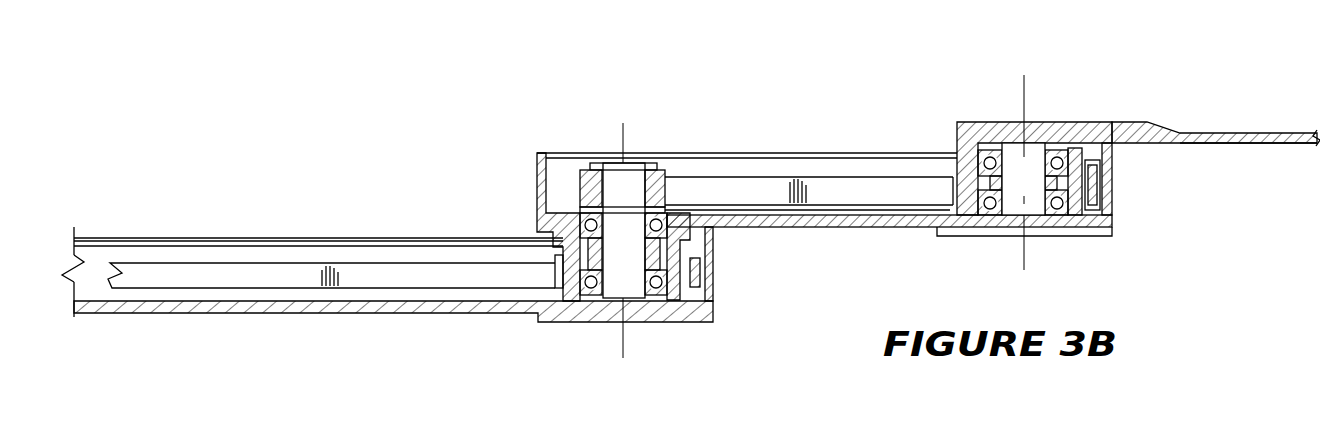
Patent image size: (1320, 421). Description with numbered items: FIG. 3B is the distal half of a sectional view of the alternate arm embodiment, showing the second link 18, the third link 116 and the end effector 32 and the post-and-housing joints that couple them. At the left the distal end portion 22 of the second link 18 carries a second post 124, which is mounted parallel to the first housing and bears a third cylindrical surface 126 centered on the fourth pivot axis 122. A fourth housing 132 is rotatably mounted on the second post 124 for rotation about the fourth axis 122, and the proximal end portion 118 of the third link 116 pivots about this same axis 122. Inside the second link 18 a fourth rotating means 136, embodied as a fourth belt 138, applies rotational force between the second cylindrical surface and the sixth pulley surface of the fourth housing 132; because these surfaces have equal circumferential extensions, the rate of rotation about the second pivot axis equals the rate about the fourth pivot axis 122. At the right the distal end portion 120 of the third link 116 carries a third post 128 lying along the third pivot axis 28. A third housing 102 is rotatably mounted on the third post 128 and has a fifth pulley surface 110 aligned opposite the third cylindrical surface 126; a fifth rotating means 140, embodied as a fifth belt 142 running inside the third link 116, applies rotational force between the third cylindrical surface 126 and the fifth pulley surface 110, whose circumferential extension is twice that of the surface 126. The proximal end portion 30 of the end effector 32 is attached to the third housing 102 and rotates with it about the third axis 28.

The second longitudinally extending link 18 is at (282, 207).
The distal end portion of the second link 22 is at (576, 330).
The third pivot axis 28 is at (1024, 100).
The proximal end portion of the end effector 30 is at (995, 114).
The end effector 32 is at (1231, 160).
The third housing 102 is at (1100, 163).
The fifth pulley surface 110 is at (940, 189).
The third link 116 is at (774, 140).
The proximal end portion of the third link 118 is at (583, 142).
The distal end portion of the third link 120 is at (997, 245).
The fourth pivot axis 122 is at (625, 133).
The second post 124 is at (608, 252).
The third cylindrical surface 126 is at (572, 189).
The third post 128 is at (1008, 187).
The fourth housing 132 is at (708, 273).
The fourth rotating means 136 is at (388, 255).
The fourth belt 138 is at (290, 278).
The fifth rotating means 140 is at (870, 215).
The fifth belt 142 is at (767, 195).